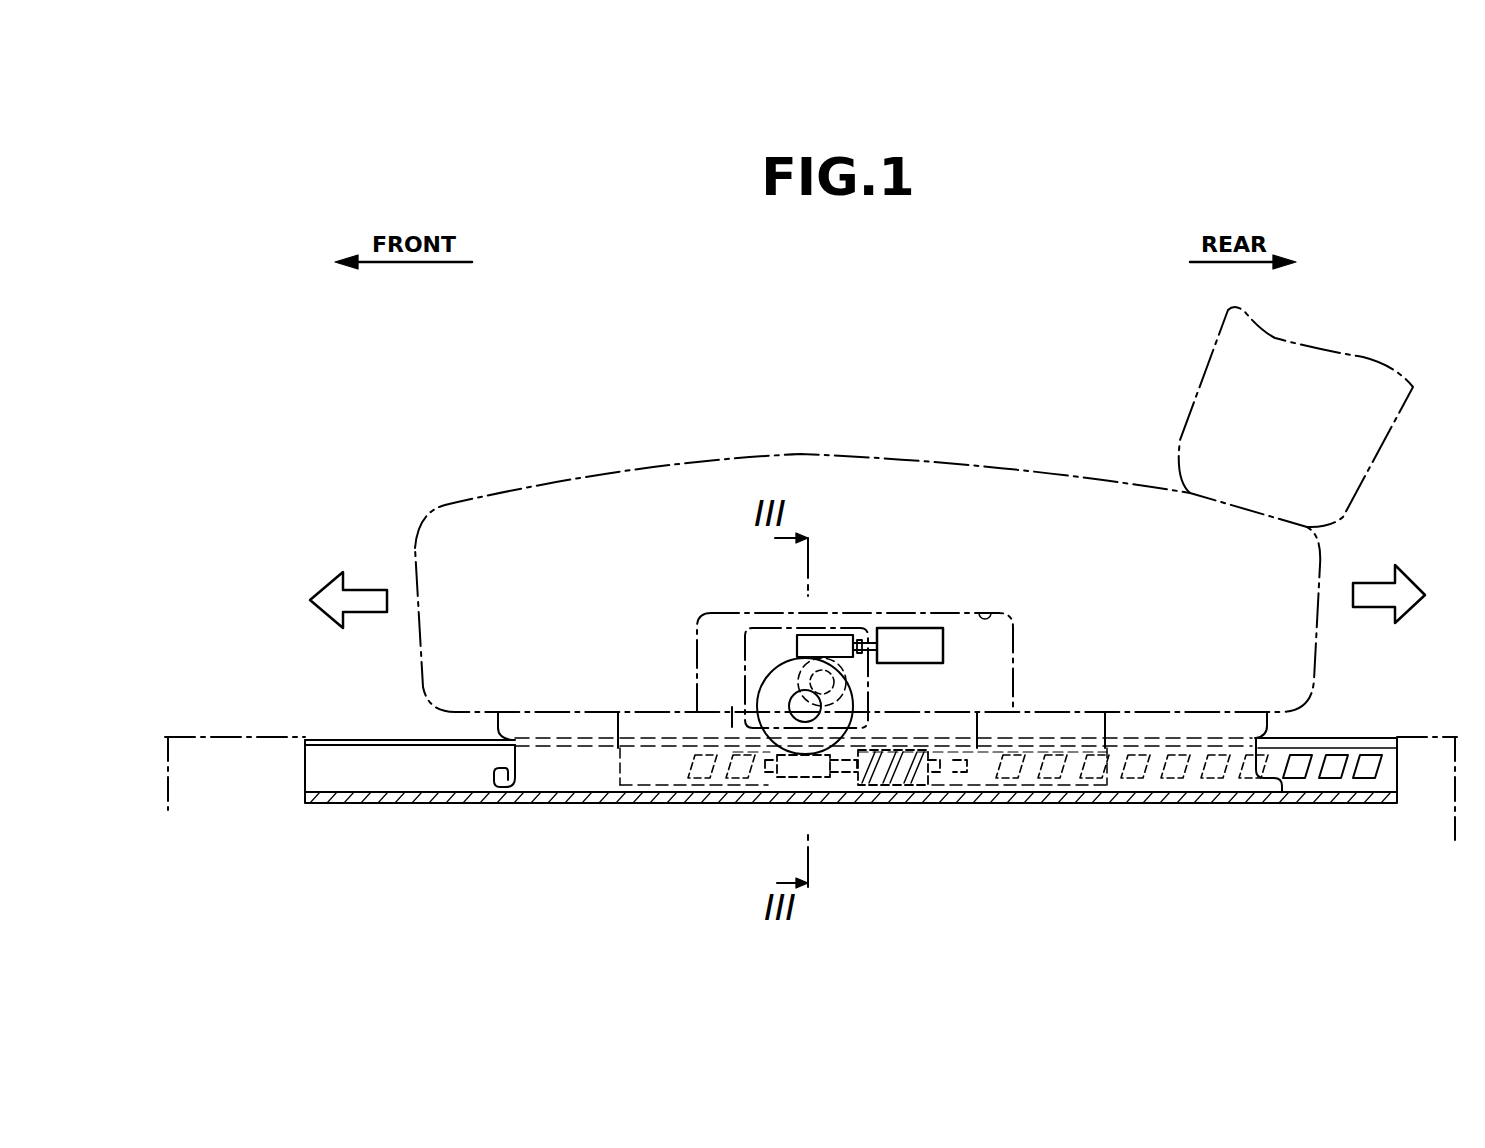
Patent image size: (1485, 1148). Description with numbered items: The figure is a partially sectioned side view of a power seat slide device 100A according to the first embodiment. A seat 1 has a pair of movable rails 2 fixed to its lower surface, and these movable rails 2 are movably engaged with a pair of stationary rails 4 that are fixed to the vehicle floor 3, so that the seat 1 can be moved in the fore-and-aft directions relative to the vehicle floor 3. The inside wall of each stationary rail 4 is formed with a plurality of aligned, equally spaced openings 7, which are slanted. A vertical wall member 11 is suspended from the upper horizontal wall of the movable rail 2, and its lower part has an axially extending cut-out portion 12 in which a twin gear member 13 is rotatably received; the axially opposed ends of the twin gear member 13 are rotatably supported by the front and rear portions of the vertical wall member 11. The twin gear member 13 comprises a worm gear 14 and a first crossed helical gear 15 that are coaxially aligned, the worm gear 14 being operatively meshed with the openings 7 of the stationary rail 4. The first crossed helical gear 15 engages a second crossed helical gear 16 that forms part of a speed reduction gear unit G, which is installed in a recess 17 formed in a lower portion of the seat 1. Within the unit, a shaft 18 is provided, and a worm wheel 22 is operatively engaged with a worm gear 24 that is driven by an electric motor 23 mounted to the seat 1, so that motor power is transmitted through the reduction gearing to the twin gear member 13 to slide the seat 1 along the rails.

The power seat slide device 100A is at (848, 293).
The seat 1 is at (490, 480).
The movable rail 2 is at (561, 768).
The vehicle floor 3 is at (258, 737).
The stationary rail 4 is at (358, 770).
The openings 7 is at (1378, 780).
The vertical wall member 11 is at (617, 760).
The cut-out portion 12 is at (947, 782).
The twin gear member 13 is at (923, 872).
The worm gear 14 is at (900, 783).
The first crossed helical gear 15 is at (813, 777).
The second crossed helical gear 16 is at (758, 688).
The recess 17 is at (988, 613).
The shaft 18 is at (790, 698).
The worm wheel 22 is at (862, 645).
The electric motor 23 is at (920, 628).
The worm gear 24 is at (835, 645).
The speed reduction gear unit G is at (743, 650).